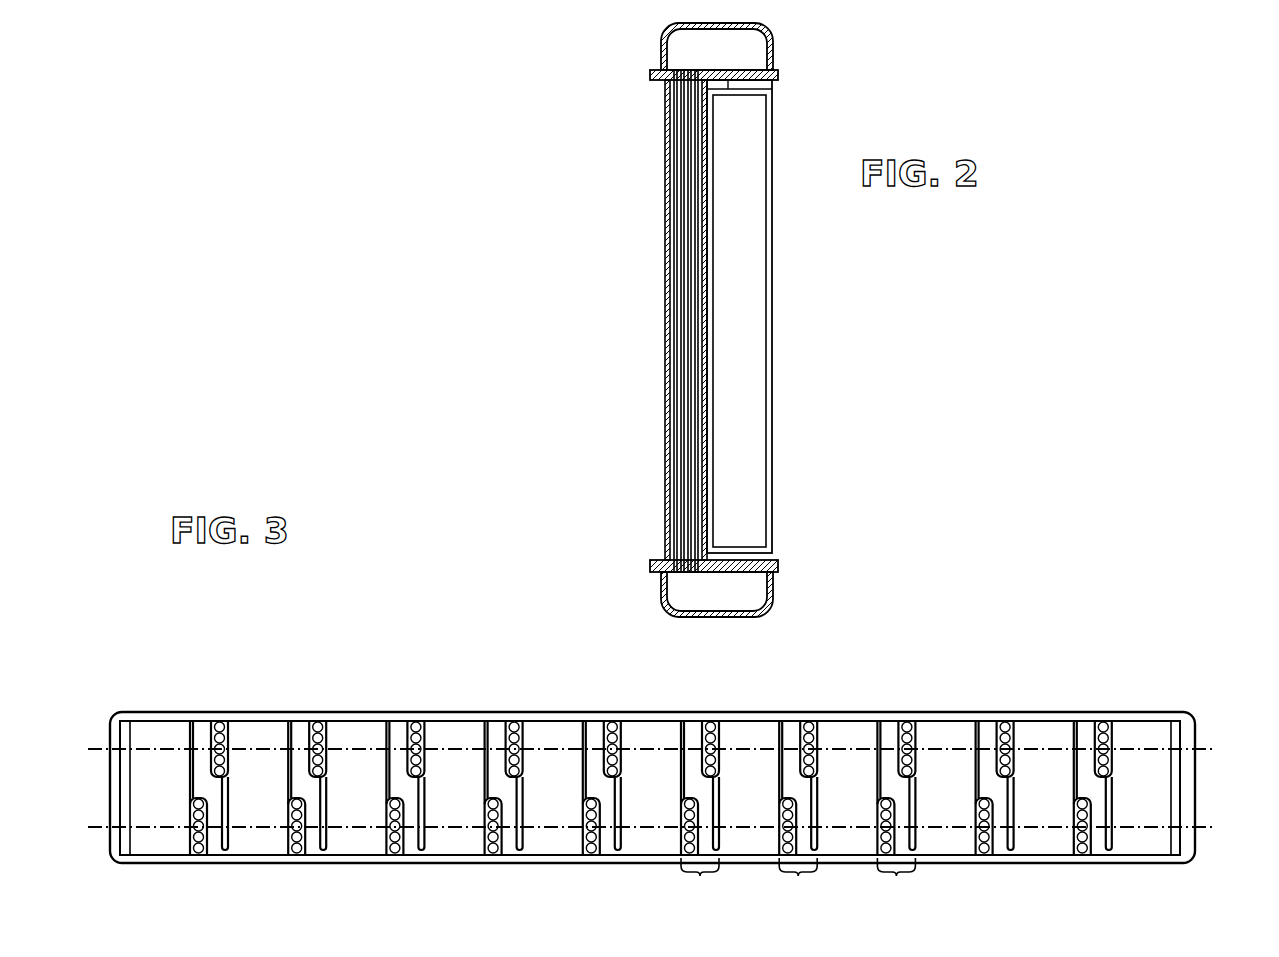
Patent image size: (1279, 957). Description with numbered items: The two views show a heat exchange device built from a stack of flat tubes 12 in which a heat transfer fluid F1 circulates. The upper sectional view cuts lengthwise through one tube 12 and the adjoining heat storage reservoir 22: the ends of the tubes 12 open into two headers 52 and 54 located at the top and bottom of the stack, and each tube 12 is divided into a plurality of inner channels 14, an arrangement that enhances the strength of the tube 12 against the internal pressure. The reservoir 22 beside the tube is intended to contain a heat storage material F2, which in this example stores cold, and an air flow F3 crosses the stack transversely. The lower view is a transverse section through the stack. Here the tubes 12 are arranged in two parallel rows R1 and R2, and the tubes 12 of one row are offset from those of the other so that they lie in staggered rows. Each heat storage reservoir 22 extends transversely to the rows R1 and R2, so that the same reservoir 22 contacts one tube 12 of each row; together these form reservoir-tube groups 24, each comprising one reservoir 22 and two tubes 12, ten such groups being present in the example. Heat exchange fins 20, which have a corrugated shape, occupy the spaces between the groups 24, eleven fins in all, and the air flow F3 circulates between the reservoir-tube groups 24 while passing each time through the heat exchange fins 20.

In FIG. 2, the tube 12 is at (639, 321).
In FIG. 3, the tube 12 is at (651, 748).
In FIG. 2, the inner channel 14 is at (702, 150).
In FIG. 3, the inner channel 14 is at (922, 776).
In FIG. 3, the heat exchange fin 20 is at (462, 845).
In FIG. 2, the heat storage reservoir 22 is at (758, 442).
In FIG. 3, the heat storage reservoir 22 is at (217, 843).
In FIG. 3, the reservoir-tube group 24 is at (798, 880).
In FIG. 2, the header 52 is at (777, 40).
In FIG. 2, the header 54 is at (755, 622).
In FIG. 2, the heat transfer fluid F1 is at (716, 48).
In FIG. 2, the heat storage material F2 is at (748, 396).
In FIG. 2, the air flow F3 is at (838, 318).
In FIG. 3, the air flow F3 is at (1043, 690).
In FIG. 3, the row of tubes R1 is at (1212, 748).
In FIG. 3, the row of tubes R2 is at (1212, 826).